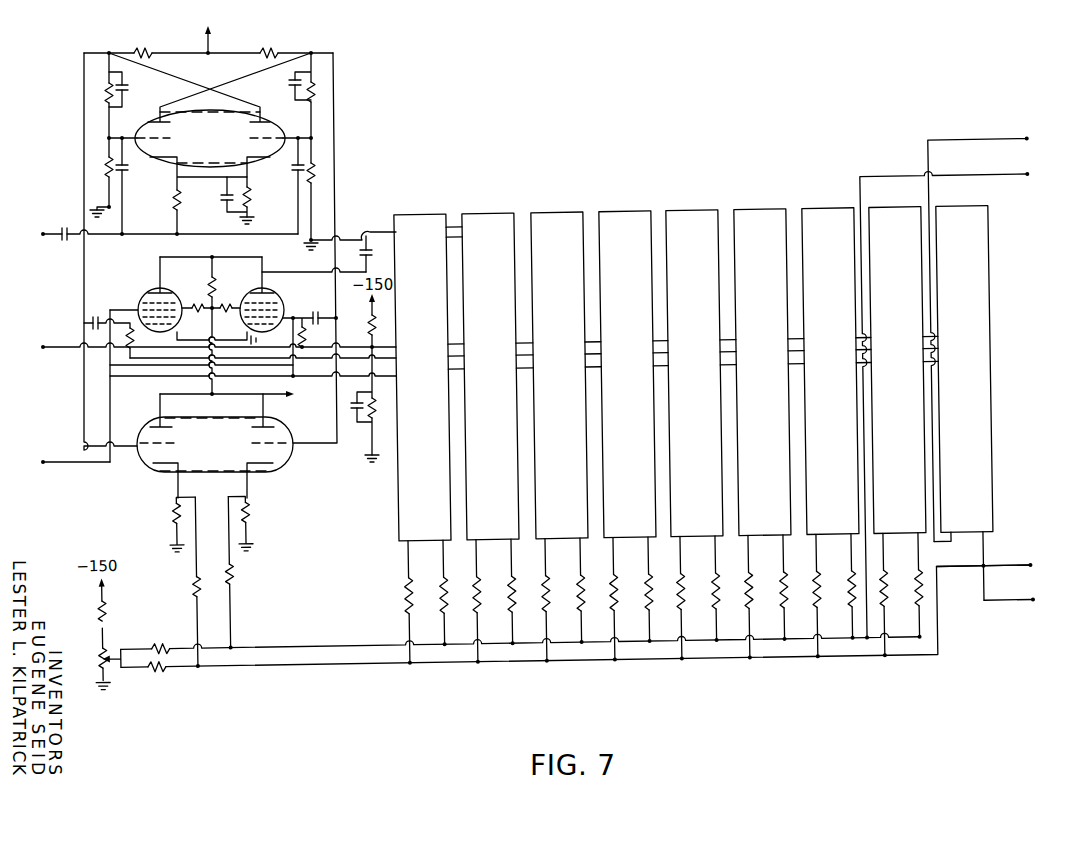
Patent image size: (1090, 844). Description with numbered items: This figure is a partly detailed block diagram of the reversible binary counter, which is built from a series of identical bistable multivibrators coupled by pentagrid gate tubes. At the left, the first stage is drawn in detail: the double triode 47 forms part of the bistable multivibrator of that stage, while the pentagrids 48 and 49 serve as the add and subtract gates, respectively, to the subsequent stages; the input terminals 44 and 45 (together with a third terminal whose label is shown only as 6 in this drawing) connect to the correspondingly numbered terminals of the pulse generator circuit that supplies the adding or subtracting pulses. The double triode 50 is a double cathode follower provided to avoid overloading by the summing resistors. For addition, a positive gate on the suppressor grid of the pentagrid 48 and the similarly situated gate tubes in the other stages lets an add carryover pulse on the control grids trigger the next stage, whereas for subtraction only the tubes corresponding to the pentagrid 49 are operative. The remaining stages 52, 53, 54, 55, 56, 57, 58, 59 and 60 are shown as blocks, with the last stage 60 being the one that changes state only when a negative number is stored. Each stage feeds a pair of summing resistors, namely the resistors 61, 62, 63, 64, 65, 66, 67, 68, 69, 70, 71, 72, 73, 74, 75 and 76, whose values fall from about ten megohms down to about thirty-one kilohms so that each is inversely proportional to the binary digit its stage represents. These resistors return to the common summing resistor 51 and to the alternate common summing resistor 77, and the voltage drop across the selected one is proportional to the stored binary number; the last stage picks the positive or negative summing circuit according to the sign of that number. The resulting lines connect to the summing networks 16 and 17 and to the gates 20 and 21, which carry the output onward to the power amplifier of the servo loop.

The slotted disc 6 is at (68, 463).
The summing network 16 is at (943, 398).
The summing network 17 is at (1013, 559).
The gate 20 is at (982, 331).
The gate 21 is at (1023, 611).
The terminal 44 is at (155, 239).
The terminal 45 is at (209, 337).
The double triode 47 is at (163, 165).
The pentagrid 48 is at (147, 297).
The pentagrid 49 is at (281, 296).
The double triode 50 is at (144, 466).
The summing resistor 51 is at (576, 635).
The stage 52 is at (414, 484).
The stage 53 is at (482, 484).
The stage 54 is at (551, 484).
The stage 55 is at (619, 484).
The stage 56 is at (686, 484).
The stage 57 is at (754, 484).
The stage 58 is at (822, 484).
The stage 59 is at (889, 484).
The stage 60 is at (956, 484).
The summing resistor 61 is at (403, 593).
The summing resistor 62 is at (442, 584).
The summing resistor 63 is at (475, 584).
The summing resistor 64 is at (510, 584).
The summing resistor 65 is at (544, 584).
The summing resistor 66 is at (579, 584).
The summing resistor 67 is at (612, 584).
The summing resistor 68 is at (647, 584).
The summing resistor 69 is at (679, 584).
The summing resistor 70 is at (714, 584).
The summing resistor 71 is at (747, 584).
The summing resistor 72 is at (782, 584).
The summing resistor 73 is at (815, 584).
The summing resistor 74 is at (850, 584).
The summing resistor 75 is at (903, 571).
The summing resistor 76 is at (938, 571).
The summing resistor 77 is at (519, 631).